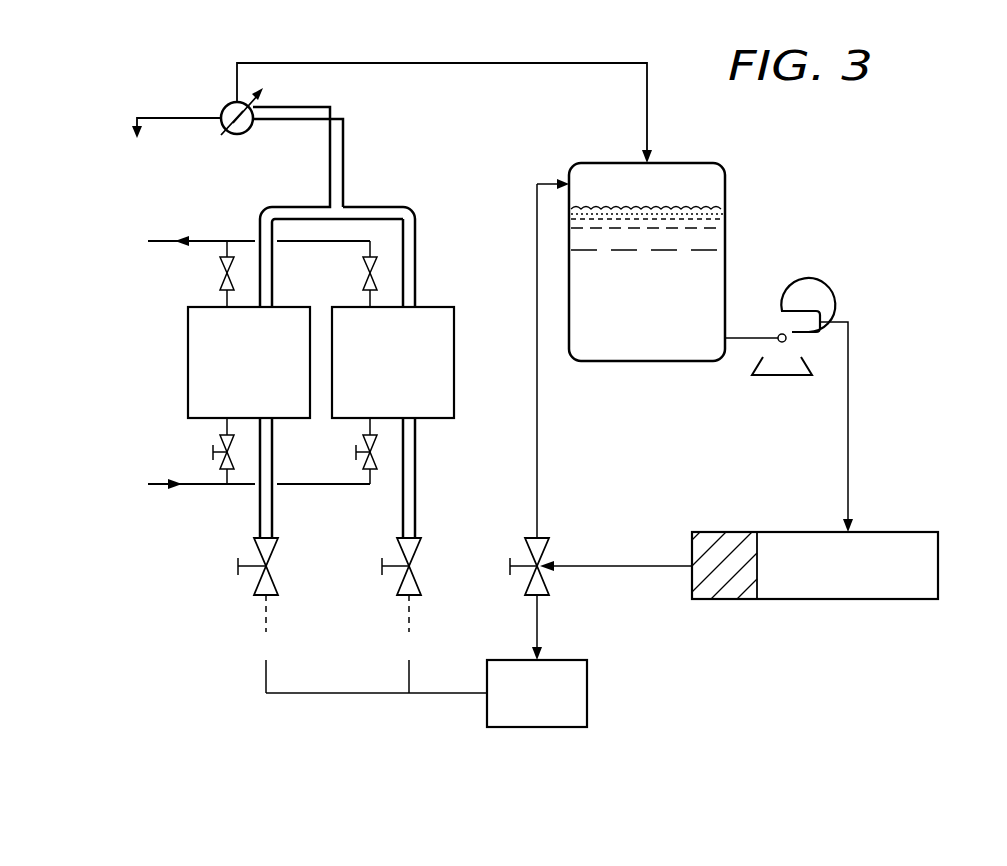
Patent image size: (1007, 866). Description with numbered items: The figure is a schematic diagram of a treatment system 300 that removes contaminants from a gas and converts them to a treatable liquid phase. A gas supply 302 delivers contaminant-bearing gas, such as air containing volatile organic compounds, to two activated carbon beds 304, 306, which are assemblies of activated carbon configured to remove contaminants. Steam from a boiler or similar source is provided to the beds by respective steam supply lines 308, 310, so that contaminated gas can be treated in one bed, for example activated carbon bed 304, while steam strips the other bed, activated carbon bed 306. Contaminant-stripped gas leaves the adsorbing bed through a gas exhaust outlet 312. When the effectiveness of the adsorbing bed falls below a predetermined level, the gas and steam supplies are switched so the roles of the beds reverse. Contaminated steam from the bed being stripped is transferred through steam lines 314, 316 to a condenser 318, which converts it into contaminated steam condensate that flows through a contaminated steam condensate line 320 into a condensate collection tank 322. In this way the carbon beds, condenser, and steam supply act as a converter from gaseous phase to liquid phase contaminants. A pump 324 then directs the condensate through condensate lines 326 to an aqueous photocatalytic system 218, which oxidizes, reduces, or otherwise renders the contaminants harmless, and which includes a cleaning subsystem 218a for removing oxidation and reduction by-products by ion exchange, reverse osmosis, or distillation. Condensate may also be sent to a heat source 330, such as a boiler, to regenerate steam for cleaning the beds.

The treatment system 300 is at (806, 176).
The gas supply 302 is at (200, 484).
The activated carbon bed 304 is at (188, 370).
The activated carbon bed 306 is at (454, 367).
The steam supply line 308 is at (272, 505).
The steam supply line 310 is at (415, 507).
The gas exhaust outlet 312 is at (200, 241).
The steam line 314 is at (272, 268).
The steam line 316 is at (415, 268).
The condenser 318 is at (227, 103).
The contaminated steam condensate line 320 is at (578, 62).
The condensate collection tank 322 is at (672, 361).
The pump 324 is at (795, 312).
The condensate lines 326 is at (848, 364).
The heat source 330 is at (543, 727).
The aqueous photocatalytic system 218 is at (870, 599).
The cleaning subsystem 218a is at (730, 599).